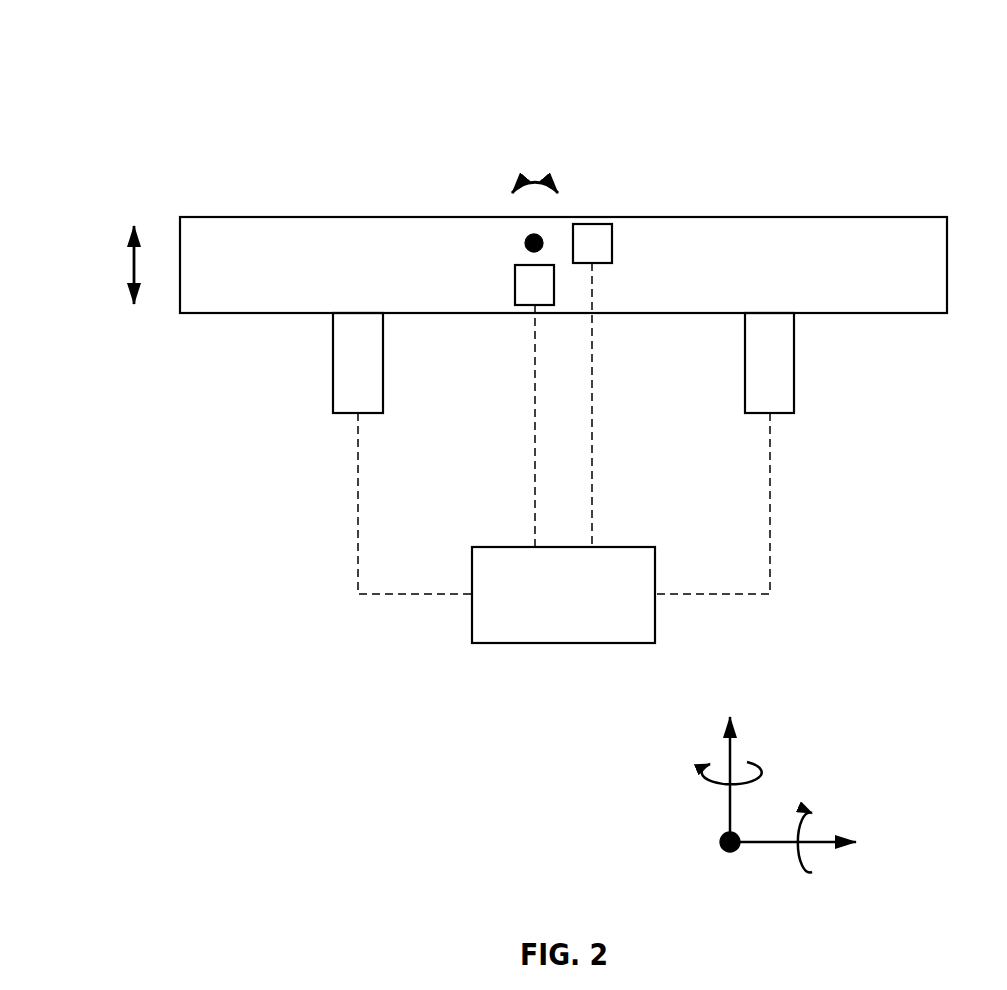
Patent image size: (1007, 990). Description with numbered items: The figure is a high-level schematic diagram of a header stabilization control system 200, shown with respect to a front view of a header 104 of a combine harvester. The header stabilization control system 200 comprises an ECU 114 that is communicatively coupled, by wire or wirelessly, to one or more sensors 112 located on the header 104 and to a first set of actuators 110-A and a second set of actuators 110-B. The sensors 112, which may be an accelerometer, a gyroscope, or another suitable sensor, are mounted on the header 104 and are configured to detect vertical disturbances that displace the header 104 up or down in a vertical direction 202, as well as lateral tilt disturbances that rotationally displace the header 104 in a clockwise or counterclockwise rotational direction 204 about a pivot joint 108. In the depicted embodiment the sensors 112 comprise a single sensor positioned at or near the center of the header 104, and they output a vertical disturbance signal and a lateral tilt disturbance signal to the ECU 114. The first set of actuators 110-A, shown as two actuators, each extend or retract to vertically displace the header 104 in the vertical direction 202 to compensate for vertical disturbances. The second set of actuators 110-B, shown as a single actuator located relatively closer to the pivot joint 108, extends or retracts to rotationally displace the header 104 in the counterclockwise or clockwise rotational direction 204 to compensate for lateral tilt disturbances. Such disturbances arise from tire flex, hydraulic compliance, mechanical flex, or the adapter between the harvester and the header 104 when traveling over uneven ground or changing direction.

The header stabilization control system 200 is at (134, 79).
The header 104 is at (234, 214).
The vertical direction 202 is at (127, 267).
The rotational direction 204 is at (538, 168).
The first set of actuators 110-A is at (332, 389).
The second set of actuators 110-B is at (604, 221).
The pivot joint 108 is at (521, 244).
The sensors 112 is at (512, 291).
The ECU 114 is at (522, 546).